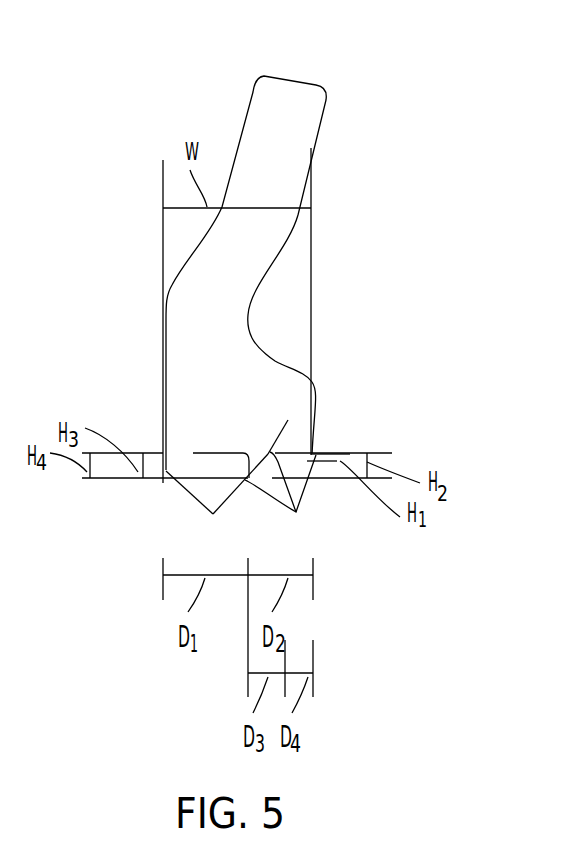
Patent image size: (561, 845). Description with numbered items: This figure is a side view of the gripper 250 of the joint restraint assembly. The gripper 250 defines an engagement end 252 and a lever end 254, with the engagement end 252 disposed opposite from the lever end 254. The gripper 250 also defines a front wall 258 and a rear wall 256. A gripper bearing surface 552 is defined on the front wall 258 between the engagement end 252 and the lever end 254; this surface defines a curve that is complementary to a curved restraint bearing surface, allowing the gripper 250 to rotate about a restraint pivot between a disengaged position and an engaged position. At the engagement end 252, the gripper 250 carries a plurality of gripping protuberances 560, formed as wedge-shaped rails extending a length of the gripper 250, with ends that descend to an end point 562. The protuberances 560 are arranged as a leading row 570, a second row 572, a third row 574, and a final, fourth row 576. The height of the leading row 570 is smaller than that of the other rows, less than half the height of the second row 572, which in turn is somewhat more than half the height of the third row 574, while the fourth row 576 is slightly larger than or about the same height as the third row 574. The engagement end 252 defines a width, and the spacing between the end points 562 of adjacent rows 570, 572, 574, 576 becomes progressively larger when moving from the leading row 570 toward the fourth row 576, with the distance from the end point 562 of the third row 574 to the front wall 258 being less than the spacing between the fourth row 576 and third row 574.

The gripper 250 is at (441, 116).
The engagement end 252 is at (222, 453).
The lever end 254 is at (292, 92).
The rear wall 256 is at (166, 305).
The front wall 258 is at (314, 403).
The gripper bearing surface 552 is at (250, 333).
The gripping protuberances 560 is at (312, 455).
The end point 562 is at (193, 453).
The leading row 570 is at (337, 454).
The second row 572 is at (313, 454).
The third row 574 is at (288, 420).
The fourth row 576 is at (173, 457).